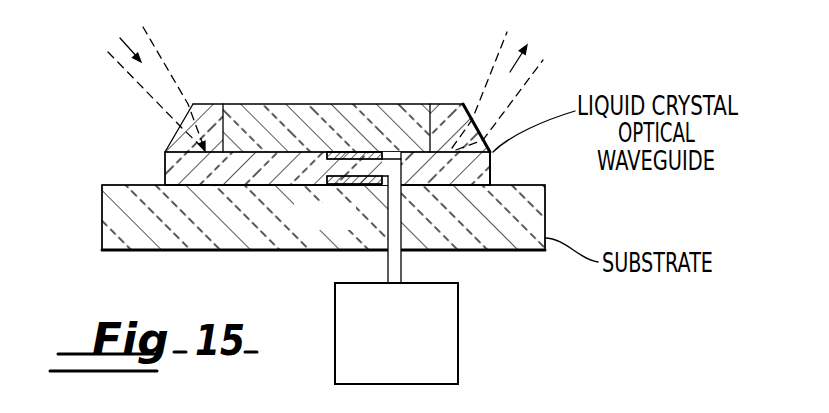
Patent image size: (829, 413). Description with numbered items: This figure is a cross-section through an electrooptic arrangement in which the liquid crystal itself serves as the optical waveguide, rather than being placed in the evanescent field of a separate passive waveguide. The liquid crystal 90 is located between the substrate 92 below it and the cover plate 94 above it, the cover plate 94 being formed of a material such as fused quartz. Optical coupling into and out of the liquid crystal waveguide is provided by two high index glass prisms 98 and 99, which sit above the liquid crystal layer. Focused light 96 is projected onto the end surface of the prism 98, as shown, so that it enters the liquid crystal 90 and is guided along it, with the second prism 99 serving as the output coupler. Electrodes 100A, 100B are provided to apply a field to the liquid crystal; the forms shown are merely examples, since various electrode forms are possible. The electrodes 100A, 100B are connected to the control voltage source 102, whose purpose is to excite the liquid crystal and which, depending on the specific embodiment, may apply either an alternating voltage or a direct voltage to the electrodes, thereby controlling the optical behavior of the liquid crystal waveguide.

The liquid crystal 90 is at (172, 162).
The substrate 92 is at (110, 222).
The cover plate 94 is at (250, 107).
The focused light 96 is at (141, 83).
The high index glass prism 98 is at (183, 107).
The high index glass prism 99 is at (443, 103).
The electrode 100A is at (348, 157).
The electrode 100B is at (348, 185).
The control voltage source 102 is at (458, 328).